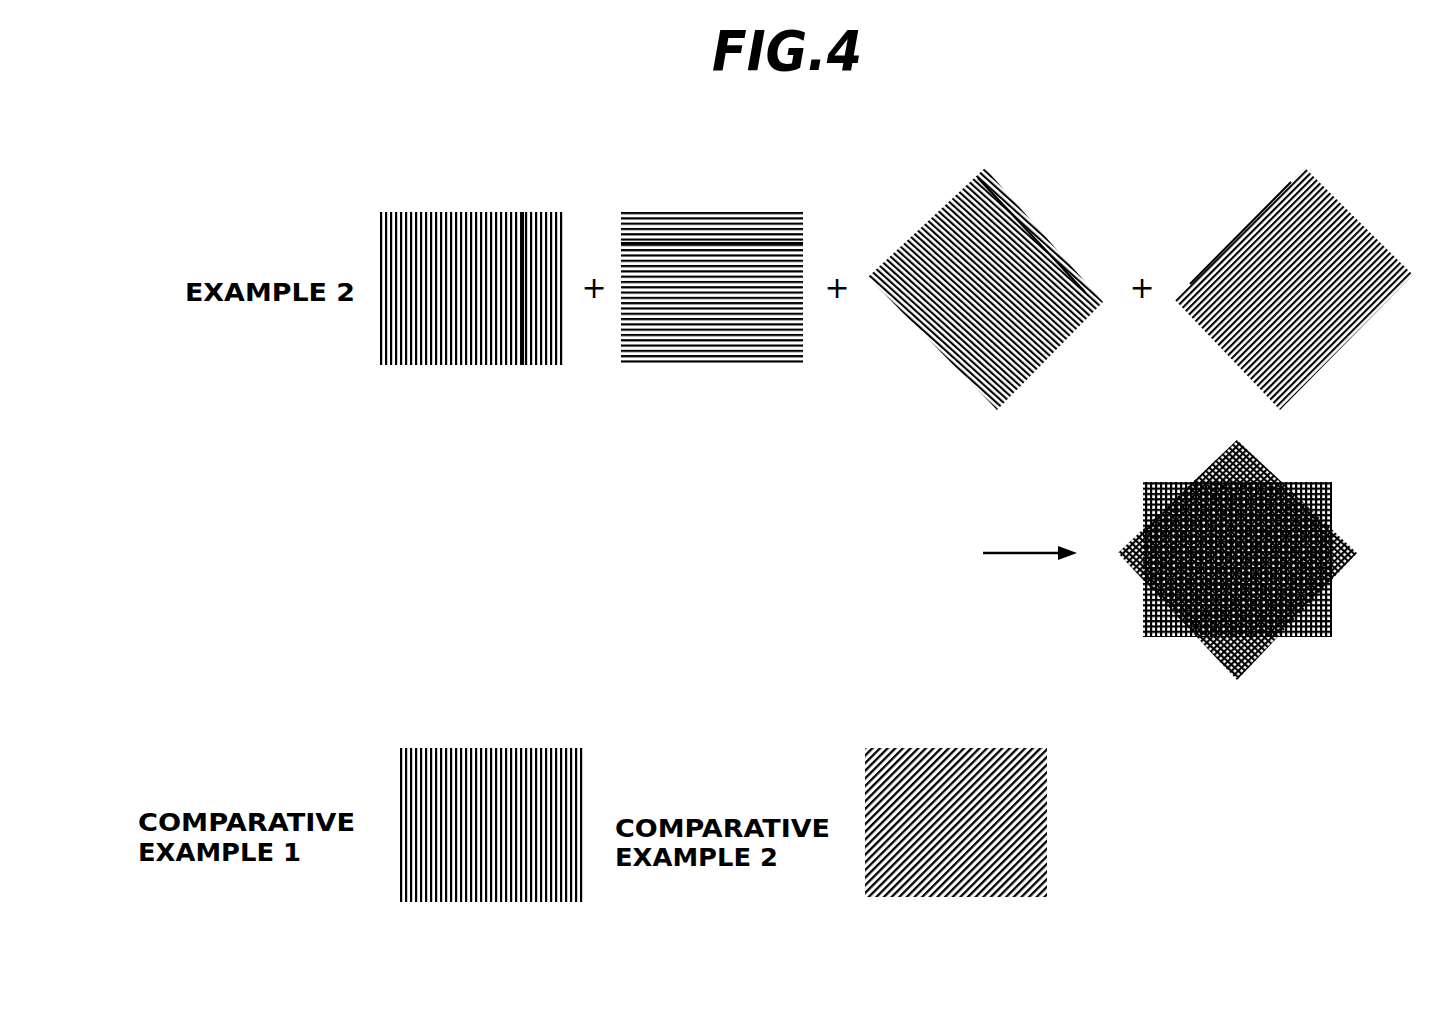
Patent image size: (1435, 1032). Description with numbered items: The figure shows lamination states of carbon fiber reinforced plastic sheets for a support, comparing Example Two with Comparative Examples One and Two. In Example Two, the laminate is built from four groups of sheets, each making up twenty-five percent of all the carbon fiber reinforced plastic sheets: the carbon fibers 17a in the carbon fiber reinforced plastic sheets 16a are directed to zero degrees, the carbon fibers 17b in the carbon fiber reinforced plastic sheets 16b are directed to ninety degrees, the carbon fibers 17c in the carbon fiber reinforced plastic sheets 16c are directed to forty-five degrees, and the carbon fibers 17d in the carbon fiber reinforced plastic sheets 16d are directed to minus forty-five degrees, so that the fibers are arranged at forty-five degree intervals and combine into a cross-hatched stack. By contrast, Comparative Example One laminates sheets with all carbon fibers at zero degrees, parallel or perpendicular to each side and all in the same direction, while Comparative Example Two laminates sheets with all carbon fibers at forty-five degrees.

The carbon fiber reinforced plastic sheets 16a is at (433, 197).
The carbon fiber reinforced plastic sheets 16b is at (691, 197).
The carbon fiber reinforced plastic sheets 16c is at (918, 196).
The carbon fiber reinforced plastic sheets 16d is at (1219, 194).
The carbon fibers 17a is at (521, 212).
The carbon fibers 17b is at (810, 247).
The carbon fibers 17c is at (978, 178).
The carbon fibers 17d is at (1297, 186).